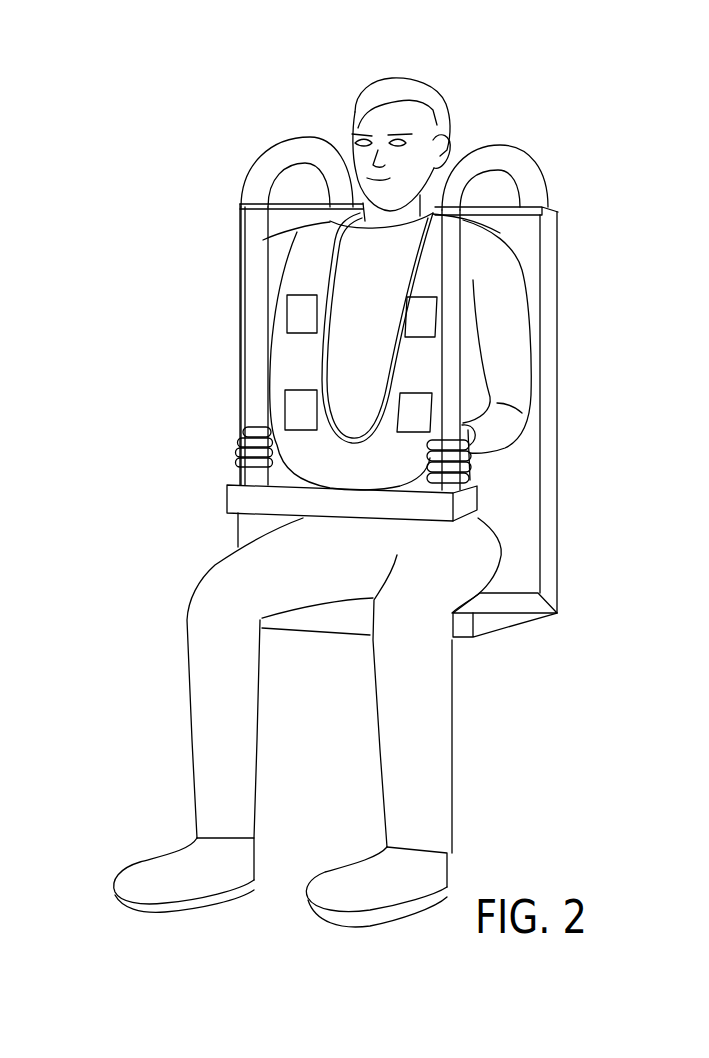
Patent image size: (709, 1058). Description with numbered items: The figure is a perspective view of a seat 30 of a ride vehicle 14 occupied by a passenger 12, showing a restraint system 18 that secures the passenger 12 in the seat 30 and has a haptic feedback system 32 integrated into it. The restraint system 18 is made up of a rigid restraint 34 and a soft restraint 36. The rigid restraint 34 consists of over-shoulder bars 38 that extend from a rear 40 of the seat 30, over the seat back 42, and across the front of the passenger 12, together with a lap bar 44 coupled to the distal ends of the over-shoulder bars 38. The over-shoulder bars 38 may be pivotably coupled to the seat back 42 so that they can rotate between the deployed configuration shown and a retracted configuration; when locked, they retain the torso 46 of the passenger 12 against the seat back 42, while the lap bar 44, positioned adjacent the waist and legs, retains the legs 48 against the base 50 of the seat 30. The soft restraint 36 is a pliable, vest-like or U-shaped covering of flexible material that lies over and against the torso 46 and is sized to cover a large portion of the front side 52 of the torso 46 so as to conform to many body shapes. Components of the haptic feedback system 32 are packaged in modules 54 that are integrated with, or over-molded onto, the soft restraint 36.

The passenger 12 is at (206, 720).
The ride vehicle 14 is at (178, 113).
The restraint system 18 is at (300, 128).
The seat 30 is at (523, 565).
The haptic feedback system 32 is at (300, 315).
The rigid restraint 34 is at (218, 178).
The soft restraint 36 is at (306, 261).
The over-shoulder bars 38 is at (282, 162).
The rear 40 is at (338, 195).
The seat back 42 is at (522, 463).
The lap bar 44 is at (235, 502).
The torso 46 is at (393, 263).
The legs 48 is at (312, 580).
The base 50 is at (503, 600).
The front side 52 is at (370, 306).
The modules 54 is at (295, 408).